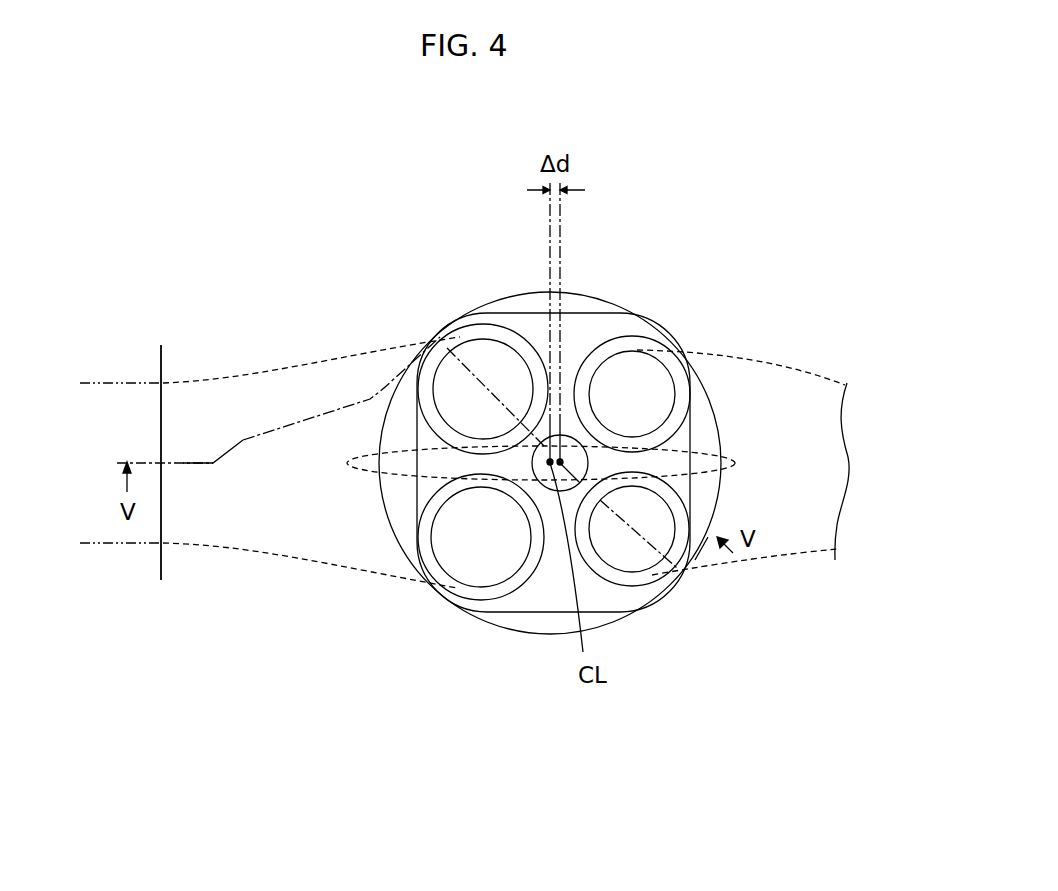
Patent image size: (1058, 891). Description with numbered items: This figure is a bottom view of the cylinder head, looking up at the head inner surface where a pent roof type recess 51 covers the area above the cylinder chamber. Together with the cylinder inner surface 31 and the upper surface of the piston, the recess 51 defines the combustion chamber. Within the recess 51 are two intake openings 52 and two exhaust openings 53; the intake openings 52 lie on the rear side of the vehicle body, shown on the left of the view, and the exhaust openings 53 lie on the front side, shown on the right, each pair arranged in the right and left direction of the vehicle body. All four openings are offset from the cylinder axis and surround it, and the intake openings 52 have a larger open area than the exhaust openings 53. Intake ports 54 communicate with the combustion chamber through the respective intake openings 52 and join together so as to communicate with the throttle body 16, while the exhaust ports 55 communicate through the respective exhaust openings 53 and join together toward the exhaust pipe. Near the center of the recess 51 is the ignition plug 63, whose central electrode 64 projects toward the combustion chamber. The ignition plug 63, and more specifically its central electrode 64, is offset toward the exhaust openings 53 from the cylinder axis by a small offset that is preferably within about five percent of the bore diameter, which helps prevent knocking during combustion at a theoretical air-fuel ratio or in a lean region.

The throttle body 16 is at (122, 382).
The cylinder inner surface 31 is at (623, 305).
The recess 51 is at (545, 615).
The intake openings 52 is at (490, 335).
The exhaust openings 53 is at (637, 350).
The intake ports 54 is at (382, 340).
The exhaust ports 55 is at (773, 362).
The ignition plug 63 is at (540, 483).
The central electrode 64 is at (570, 433).